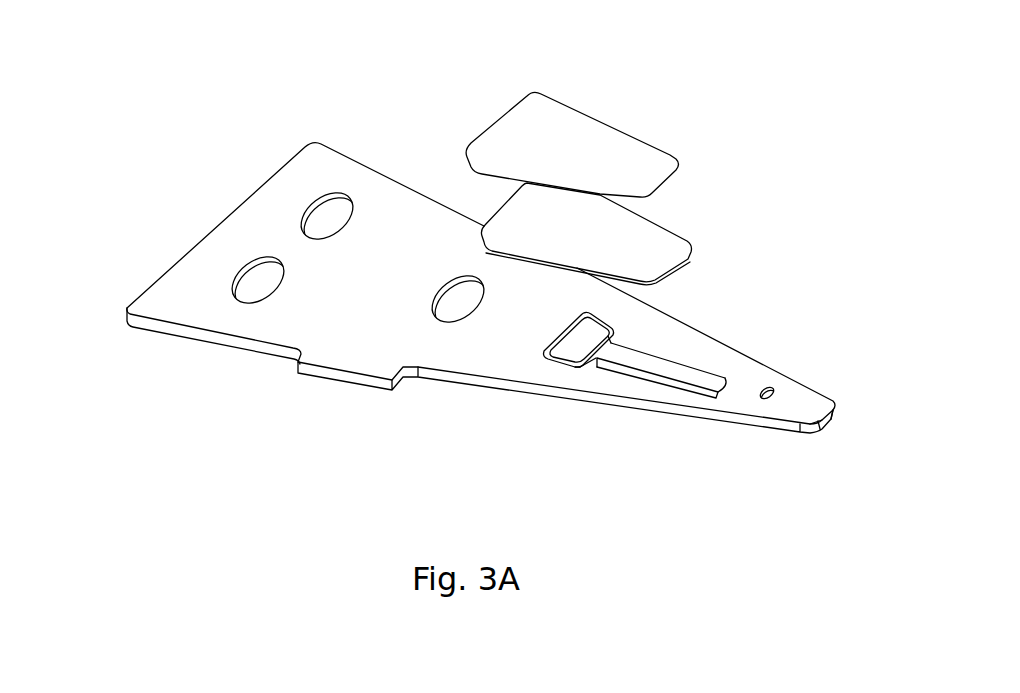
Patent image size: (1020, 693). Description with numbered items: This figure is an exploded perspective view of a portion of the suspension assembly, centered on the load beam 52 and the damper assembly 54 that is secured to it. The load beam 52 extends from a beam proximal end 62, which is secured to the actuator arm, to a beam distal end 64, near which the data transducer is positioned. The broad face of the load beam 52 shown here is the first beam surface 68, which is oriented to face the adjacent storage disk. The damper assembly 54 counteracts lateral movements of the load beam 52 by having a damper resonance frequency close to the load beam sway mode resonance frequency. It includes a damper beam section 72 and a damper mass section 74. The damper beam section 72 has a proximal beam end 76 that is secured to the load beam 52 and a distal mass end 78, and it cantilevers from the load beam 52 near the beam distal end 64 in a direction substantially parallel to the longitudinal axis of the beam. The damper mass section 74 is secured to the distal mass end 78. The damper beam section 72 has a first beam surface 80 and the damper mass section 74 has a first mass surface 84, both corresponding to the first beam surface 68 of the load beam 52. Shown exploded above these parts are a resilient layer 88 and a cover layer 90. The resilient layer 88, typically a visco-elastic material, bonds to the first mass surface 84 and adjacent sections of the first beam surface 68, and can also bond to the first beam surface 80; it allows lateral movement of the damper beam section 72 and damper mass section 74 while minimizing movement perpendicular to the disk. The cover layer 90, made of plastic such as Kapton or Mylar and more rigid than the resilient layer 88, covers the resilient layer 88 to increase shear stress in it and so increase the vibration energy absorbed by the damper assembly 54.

The load beam 52 is at (365, 232).
The beam proximal end 62 is at (178, 255).
The first beam surface 68 is at (333, 335).
The beam distal end 64 is at (826, 409).
The cover layer 90 is at (605, 152).
The resilient layer 88 is at (651, 237).
The first mass surface 84 is at (585, 341).
The damper mass section 74 is at (573, 348).
The damper beam section 72 is at (620, 362).
The distal mass end 78 is at (602, 346).
The first beam surface 80 is at (666, 368).
The proximal beam end 76 is at (721, 383).
The damper assembly 54 is at (550, 453).